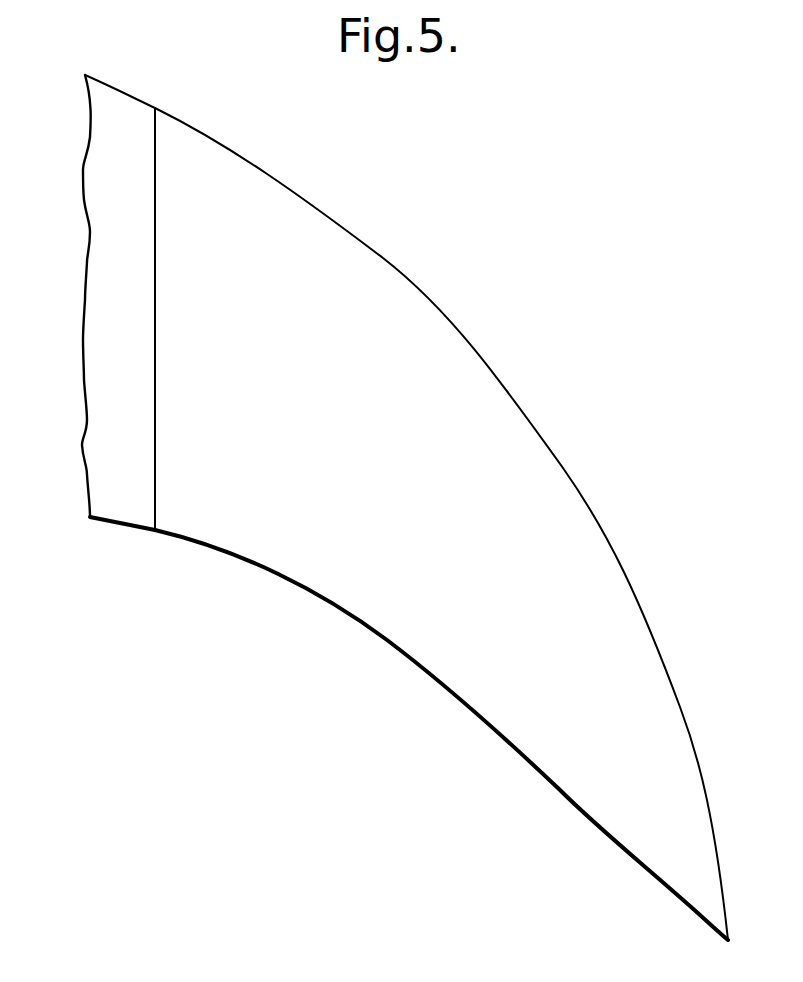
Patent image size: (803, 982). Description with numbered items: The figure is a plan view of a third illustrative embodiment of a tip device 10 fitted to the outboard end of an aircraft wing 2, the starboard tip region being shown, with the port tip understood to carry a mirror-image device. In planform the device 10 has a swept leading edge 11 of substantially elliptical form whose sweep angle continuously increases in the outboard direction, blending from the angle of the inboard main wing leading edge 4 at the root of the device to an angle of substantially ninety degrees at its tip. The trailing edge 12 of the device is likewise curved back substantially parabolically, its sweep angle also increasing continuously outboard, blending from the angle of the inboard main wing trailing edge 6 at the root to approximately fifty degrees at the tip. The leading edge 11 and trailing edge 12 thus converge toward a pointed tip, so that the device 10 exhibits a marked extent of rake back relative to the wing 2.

The wing 2 is at (387, 476).
The inboard main wing leading edge 4 is at (122, 92).
The inboard main wing trailing edge 6 is at (120, 527).
The tip device 10 is at (405, 487).
The swept leading edge 11 is at (553, 448).
The trailing edge 12 is at (427, 673).